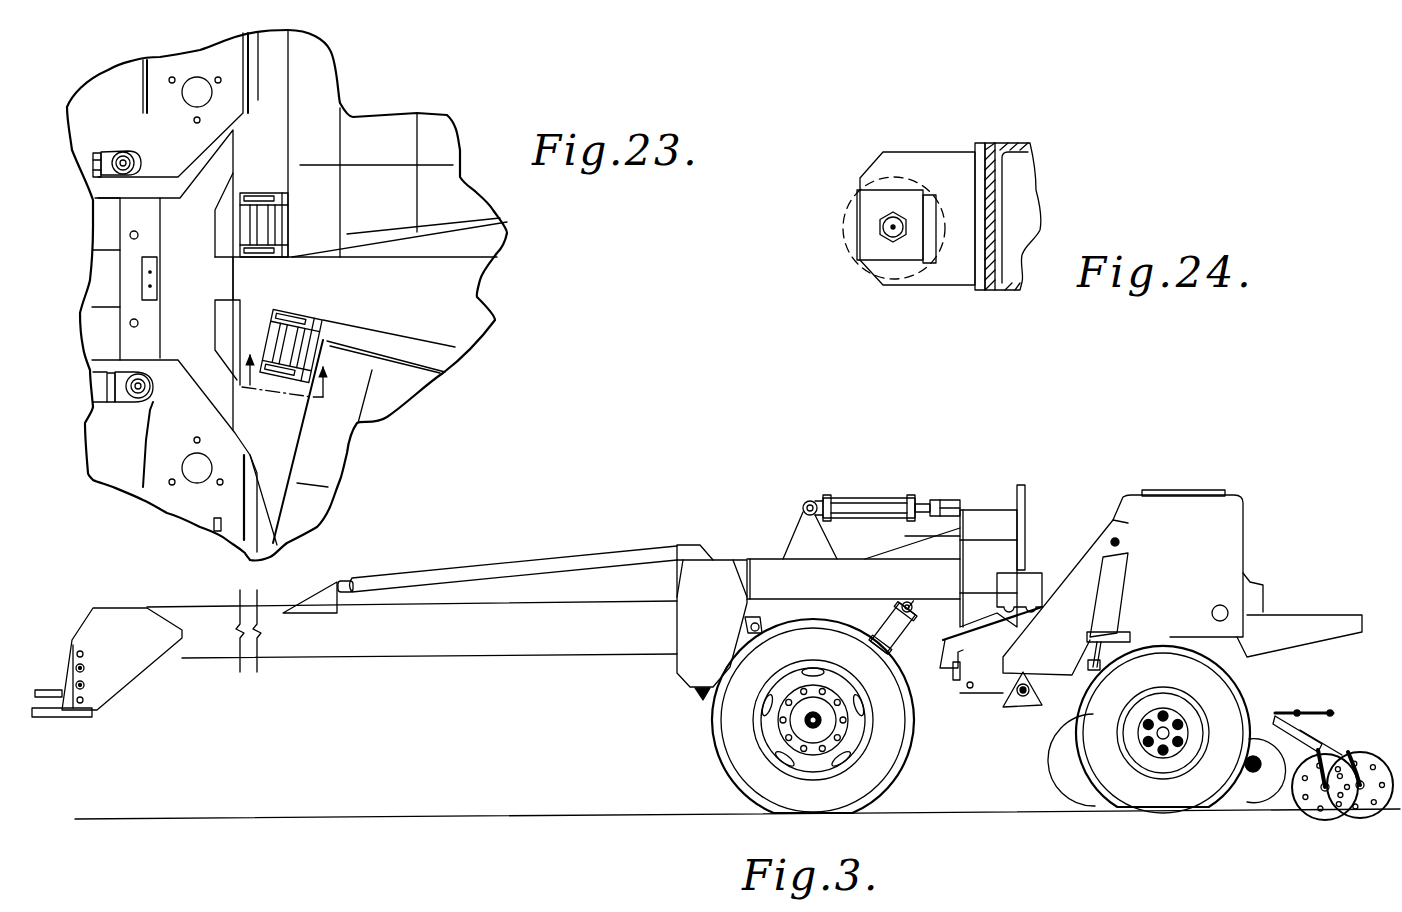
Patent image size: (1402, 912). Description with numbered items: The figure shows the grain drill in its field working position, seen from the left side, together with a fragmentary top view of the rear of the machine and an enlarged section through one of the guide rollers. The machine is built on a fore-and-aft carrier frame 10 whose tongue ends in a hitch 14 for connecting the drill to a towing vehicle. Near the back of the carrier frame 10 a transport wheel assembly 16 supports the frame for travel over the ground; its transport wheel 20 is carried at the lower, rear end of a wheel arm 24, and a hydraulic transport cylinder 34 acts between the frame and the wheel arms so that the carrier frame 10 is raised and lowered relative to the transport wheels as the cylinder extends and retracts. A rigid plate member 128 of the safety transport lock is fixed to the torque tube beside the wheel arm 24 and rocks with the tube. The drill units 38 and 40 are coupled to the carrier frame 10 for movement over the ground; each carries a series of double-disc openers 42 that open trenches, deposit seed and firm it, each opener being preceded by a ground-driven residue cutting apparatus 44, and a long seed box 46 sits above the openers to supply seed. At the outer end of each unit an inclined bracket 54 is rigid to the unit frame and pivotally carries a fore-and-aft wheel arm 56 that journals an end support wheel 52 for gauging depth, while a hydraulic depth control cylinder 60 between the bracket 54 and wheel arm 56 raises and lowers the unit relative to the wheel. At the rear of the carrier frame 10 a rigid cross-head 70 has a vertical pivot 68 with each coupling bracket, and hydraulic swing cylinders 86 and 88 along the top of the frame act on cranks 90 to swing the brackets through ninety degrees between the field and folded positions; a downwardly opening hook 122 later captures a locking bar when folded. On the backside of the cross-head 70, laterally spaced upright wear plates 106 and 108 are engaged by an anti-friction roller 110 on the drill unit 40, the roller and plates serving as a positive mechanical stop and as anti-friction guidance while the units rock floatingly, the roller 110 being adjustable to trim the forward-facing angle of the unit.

In FIG. 3, the carrier frame 10 is at (468, 680).
In FIG. 3, the hitch 14 is at (38, 715).
In FIG. 3, the transport wheel assembly 16 is at (702, 738).
In FIG. 3, the transport wheel 20 is at (722, 773).
In FIG. 23, the wheel arm 24 is at (293, 386).
In FIG. 3, the wheel arm 24 is at (698, 694).
In FIG. 3, the hydraulic transport cylinder 34 is at (908, 648).
In FIG. 23, the drill unit 38 is at (470, 133).
In FIG. 23, the drill unit 40 is at (458, 315).
In FIG. 24, the drill unit 40 is at (973, 122).
In FIG. 3, the drill unit 40 is at (1260, 535).
In FIG. 3, the opener 42 is at (1340, 725).
In FIG. 3, the residue cutting apparatus 44 is at (1055, 752).
In FIG. 3, the seed box 46 is at (1227, 507).
In FIG. 3, the end support wheel 52 is at (1207, 695).
In FIG. 3, the bracket 54 is at (1087, 570).
In FIG. 3, the wheel arm 56 is at (1050, 720).
In FIG. 3, the hydraulic depth control cylinder 60 is at (1107, 610).
In FIG. 23, the vertical pivot 68 is at (193, 87).
In FIG. 23, the cross-head 70 is at (213, 180).
In FIG. 23, the hydraulic swing cylinder 86 is at (87, 160).
In FIG. 23, the hydraulic swing cylinder 88 is at (95, 388).
In FIG. 3, the hydraulic swing cylinder 88 is at (862, 498).
In FIG. 3, the crank 90 is at (965, 510).
In FIG. 23, the wear plate 106 is at (237, 312).
In FIG. 23, the wear plate 108 is at (225, 226).
In FIG. 23, the anti-friction roller 110 is at (268, 343).
In FIG. 24, the anti-friction roller 110 is at (850, 228).
In FIG. 3, the hook 122 is at (947, 636).
In FIG. 3, the plate member 128 is at (762, 625).